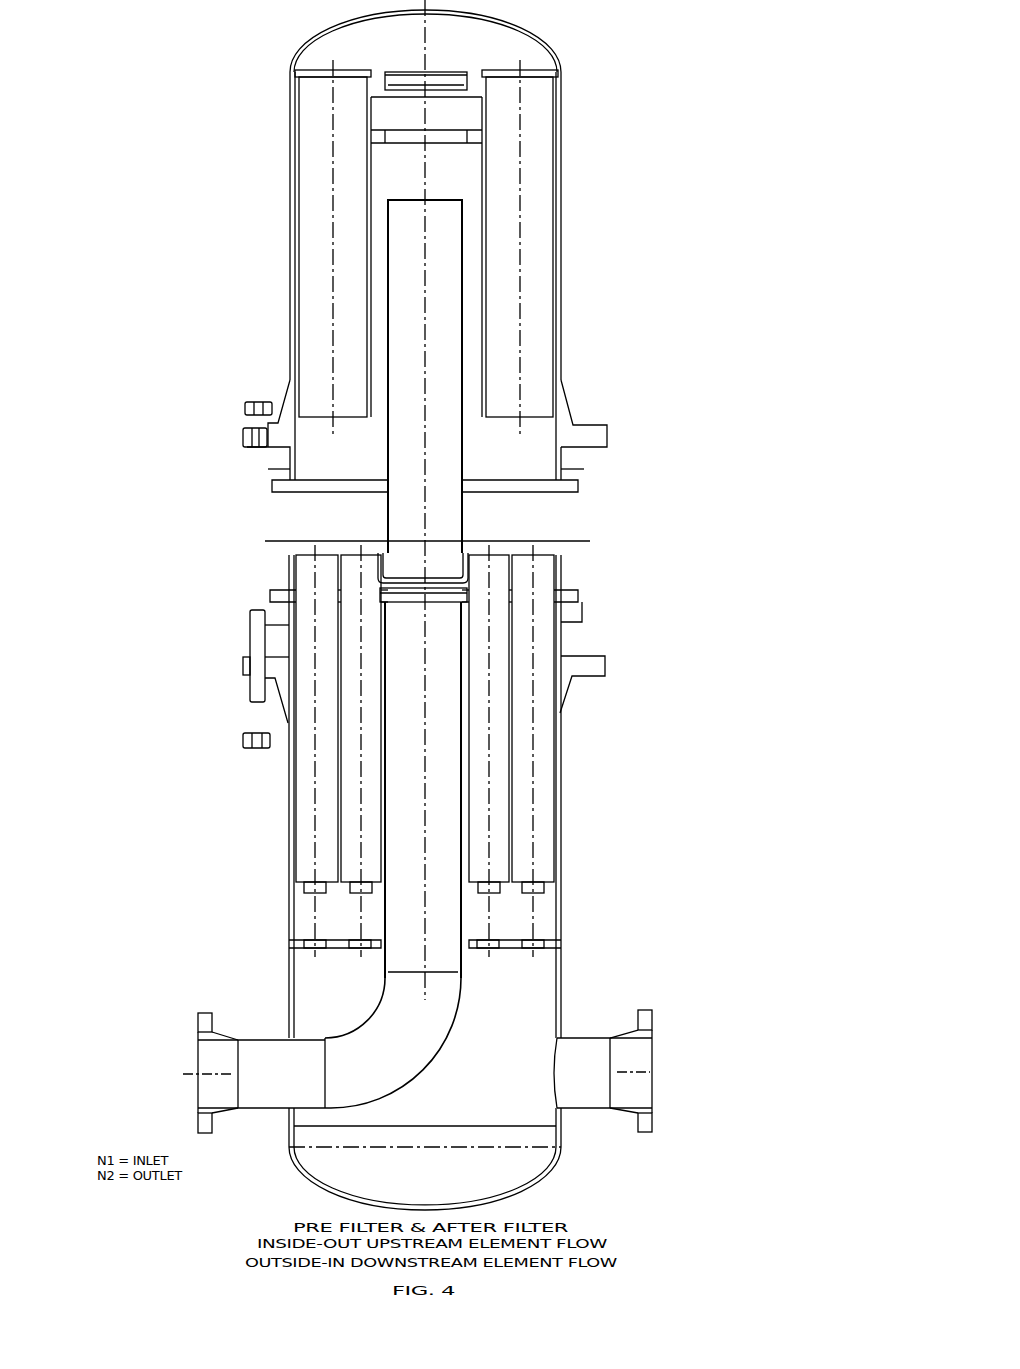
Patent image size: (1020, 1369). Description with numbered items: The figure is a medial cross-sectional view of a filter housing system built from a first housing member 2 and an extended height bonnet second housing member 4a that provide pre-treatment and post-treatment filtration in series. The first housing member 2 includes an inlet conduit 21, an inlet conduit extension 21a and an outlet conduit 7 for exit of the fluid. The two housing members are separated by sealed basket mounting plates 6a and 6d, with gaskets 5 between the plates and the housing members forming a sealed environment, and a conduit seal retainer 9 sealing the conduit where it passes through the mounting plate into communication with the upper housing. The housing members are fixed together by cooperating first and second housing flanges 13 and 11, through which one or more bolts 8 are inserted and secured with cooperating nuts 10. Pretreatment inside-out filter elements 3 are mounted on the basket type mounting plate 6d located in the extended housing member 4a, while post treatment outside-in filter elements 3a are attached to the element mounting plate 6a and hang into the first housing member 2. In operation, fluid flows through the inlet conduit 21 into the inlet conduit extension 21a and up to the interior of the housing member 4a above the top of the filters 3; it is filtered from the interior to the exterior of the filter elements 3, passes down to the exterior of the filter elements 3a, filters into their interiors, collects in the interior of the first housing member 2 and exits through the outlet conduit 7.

The filter elements 3 is at (345, 68).
The conduit seal retainer 9 is at (469, 74).
The extended housing member 4a is at (287, 237).
The nuts 10 is at (246, 403).
The second housing flange 11 is at (609, 427).
The basket mounting plate 6d is at (261, 487).
The gaskets 5 is at (561, 469).
The filter elements 3a is at (285, 558).
The inlet conduit extension 21a is at (466, 517).
The element mounting plate 6a is at (266, 596).
The bolts 8 is at (249, 688).
The first housing flange 13 is at (611, 670).
The first housing member 2 is at (288, 952).
The inlet conduit 21 is at (262, 1062).
The outlet conduit 7 is at (587, 1063).